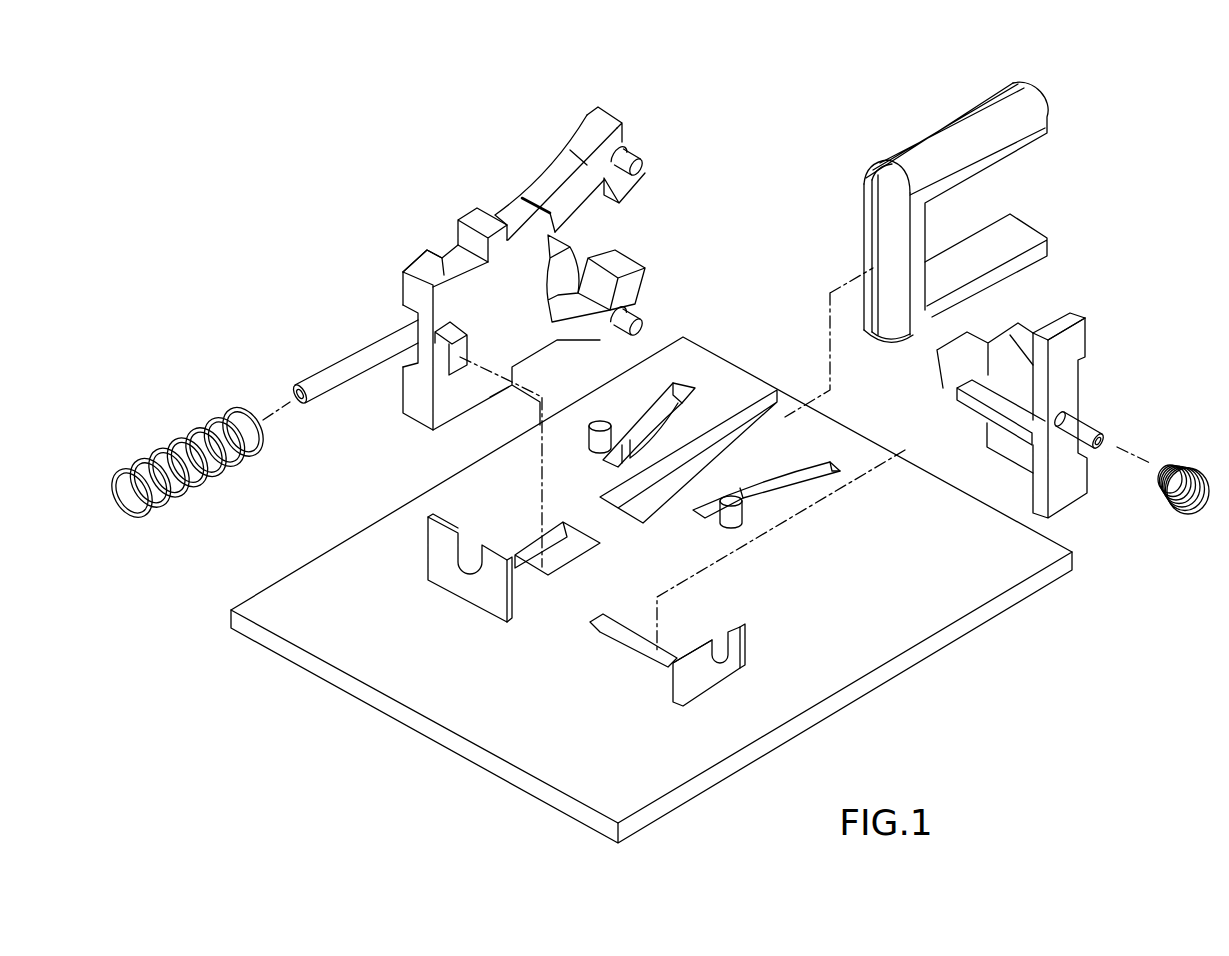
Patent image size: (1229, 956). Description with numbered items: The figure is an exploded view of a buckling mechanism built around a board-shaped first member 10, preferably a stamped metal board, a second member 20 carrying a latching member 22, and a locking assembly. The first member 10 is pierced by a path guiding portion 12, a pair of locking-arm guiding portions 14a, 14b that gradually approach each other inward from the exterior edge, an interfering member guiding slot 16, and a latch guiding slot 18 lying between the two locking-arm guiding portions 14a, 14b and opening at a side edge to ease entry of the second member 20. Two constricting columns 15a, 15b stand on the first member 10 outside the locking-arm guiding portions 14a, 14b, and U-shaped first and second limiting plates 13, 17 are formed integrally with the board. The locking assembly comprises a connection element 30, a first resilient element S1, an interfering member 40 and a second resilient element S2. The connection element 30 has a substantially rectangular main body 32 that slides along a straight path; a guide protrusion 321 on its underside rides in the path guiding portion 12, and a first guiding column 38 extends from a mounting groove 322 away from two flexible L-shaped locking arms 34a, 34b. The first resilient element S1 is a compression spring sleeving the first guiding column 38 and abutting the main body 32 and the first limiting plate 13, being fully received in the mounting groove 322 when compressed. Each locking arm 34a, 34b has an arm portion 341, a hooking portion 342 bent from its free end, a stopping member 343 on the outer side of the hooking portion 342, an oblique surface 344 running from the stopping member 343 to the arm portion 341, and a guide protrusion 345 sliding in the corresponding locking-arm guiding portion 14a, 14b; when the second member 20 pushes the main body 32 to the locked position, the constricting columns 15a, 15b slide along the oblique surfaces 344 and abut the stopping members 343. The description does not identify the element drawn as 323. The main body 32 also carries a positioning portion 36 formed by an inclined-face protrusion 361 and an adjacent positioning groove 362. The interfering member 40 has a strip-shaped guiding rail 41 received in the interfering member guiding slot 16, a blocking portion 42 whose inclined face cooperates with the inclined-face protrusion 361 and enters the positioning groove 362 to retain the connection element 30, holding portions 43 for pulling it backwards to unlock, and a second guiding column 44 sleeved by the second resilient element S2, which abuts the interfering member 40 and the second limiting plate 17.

The first member 10 is at (1014, 610).
The path guiding portion 12 is at (527, 553).
The first limiting plate 13 is at (467, 588).
The locking-arm guiding portion 14a is at (657, 413).
The locking-arm guiding portion 14b is at (813, 472).
The constricting column 15a is at (593, 448).
The constricting column 15b is at (733, 523).
The interfering member guiding slot 16 is at (630, 633).
The second limiting plate 17 is at (697, 682).
The latch guiding slot 18 is at (747, 437).
The second member 20 is at (924, 206).
The latching member 22 is at (877, 229).
The connection element 30 is at (500, 240).
The main body 32 is at (460, 349).
The guide protrusion 321 is at (460, 367).
The mounting groove 322 is at (417, 350).
The hook plate 323 is at (573, 256).
The locking arm 34a is at (638, 307).
The locking arm 34b is at (589, 133).
The arm portion 341 is at (552, 185).
The hooking portion 342 is at (638, 173).
The stopping member 343 is at (608, 120).
The oblique surface 344 is at (578, 150).
The guide protrusion 345 is at (635, 121).
The positioning portion 36 is at (430, 220).
The inclined-face protrusion 361 is at (397, 288).
The positioning groove 362 is at (455, 225).
The first guiding column 38 is at (327, 380).
The interfering member 40 is at (1042, 383).
The guiding rail 41 is at (1005, 425).
The blocking portion 42 is at (973, 343).
The holding portion 43 is at (1057, 320).
The second guiding column 44 is at (1090, 430).
The first resilient element S1 is at (196, 425).
The second resilient element S2 is at (1166, 448).